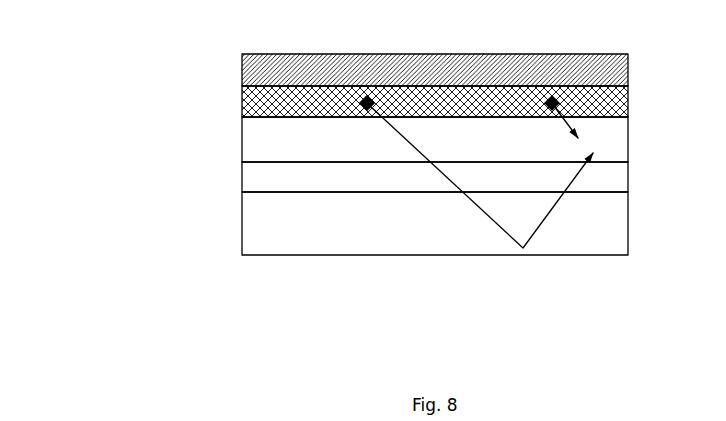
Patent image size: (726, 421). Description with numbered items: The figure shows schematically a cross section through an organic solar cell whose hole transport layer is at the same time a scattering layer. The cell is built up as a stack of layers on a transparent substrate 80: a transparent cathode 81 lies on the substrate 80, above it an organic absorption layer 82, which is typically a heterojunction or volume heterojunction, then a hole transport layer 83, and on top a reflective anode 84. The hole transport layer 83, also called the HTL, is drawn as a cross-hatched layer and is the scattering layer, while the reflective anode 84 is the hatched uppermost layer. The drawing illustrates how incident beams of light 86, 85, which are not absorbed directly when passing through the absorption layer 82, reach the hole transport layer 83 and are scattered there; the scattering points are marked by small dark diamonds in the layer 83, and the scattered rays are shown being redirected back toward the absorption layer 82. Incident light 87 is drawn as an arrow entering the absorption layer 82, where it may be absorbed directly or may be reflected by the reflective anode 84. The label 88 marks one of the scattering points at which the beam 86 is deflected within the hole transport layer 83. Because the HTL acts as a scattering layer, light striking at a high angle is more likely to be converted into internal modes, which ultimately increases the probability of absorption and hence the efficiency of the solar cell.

The transparent substrate 80 is at (622, 220).
The transparent cathode 81 is at (622, 174).
The organic absorption layer 82 is at (622, 136).
The hole transport layer 83 is at (622, 102).
The reflective anode 84 is at (622, 69).
The incident beam of light 85 is at (552, 108).
The incident beam of light 86 is at (367, 108).
The incident light 87 is at (307, 140).
The scattering particle 88 is at (368, 97).